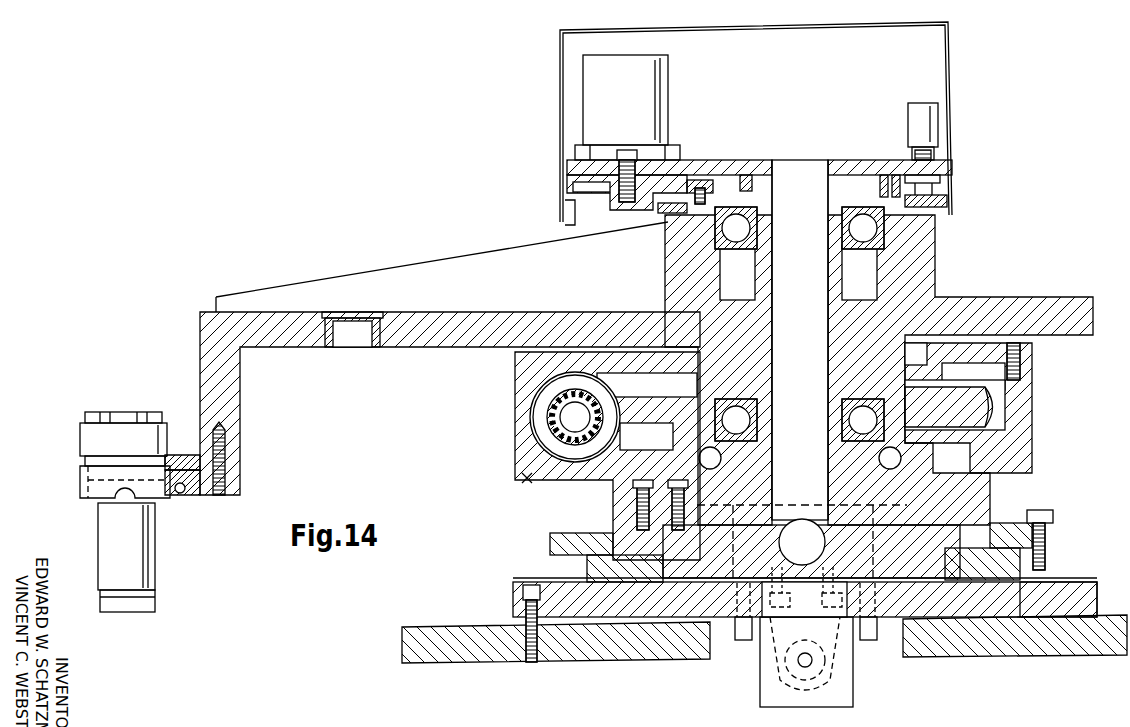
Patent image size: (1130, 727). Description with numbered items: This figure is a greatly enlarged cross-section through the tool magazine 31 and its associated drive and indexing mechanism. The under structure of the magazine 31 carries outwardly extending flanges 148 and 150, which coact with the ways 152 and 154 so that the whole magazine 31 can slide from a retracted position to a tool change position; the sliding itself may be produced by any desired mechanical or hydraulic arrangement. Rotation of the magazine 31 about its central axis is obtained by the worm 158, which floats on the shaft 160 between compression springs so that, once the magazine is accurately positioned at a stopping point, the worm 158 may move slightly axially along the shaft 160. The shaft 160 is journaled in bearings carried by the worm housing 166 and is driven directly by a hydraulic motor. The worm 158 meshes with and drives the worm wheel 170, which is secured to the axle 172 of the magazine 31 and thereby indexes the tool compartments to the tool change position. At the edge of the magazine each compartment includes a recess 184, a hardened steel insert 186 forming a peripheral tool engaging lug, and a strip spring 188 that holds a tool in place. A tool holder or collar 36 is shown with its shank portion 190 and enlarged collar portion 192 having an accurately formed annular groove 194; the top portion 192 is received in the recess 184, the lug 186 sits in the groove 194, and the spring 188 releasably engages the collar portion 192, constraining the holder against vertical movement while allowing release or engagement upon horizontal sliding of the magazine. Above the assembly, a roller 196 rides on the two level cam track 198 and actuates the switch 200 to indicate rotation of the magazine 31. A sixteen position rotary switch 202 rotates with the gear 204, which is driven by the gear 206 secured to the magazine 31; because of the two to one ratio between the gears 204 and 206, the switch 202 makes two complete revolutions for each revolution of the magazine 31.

The tool magazine 31 is at (481, 203).
The tool holder or collar 36 is at (78, 484).
The outwardly extending flange 148 is at (625, 576).
The outwardly extending flange 150 is at (985, 572).
The way 152 is at (566, 600).
The way 154 is at (1048, 597).
The worm 158 is at (557, 435).
The shaft 160 is at (568, 417).
The worm housing 166 is at (527, 476).
The worm wheel 170 is at (603, 400).
The axle 172 is at (740, 345).
The recess 184 is at (182, 475).
The hardened steel insert 186 is at (176, 455).
The strip spring 188 is at (181, 492).
The shank portion 190 is at (108, 544).
The enlarged collar portion 192 is at (90, 441).
The annular groove 194 is at (85, 462).
The roller 196 is at (932, 190).
The two level cam track 198 is at (938, 198).
The switch 200 is at (930, 128).
The sixteen position rotary switch 202 is at (600, 98).
The gear 204 is at (563, 211).
The gear 206 is at (692, 182).